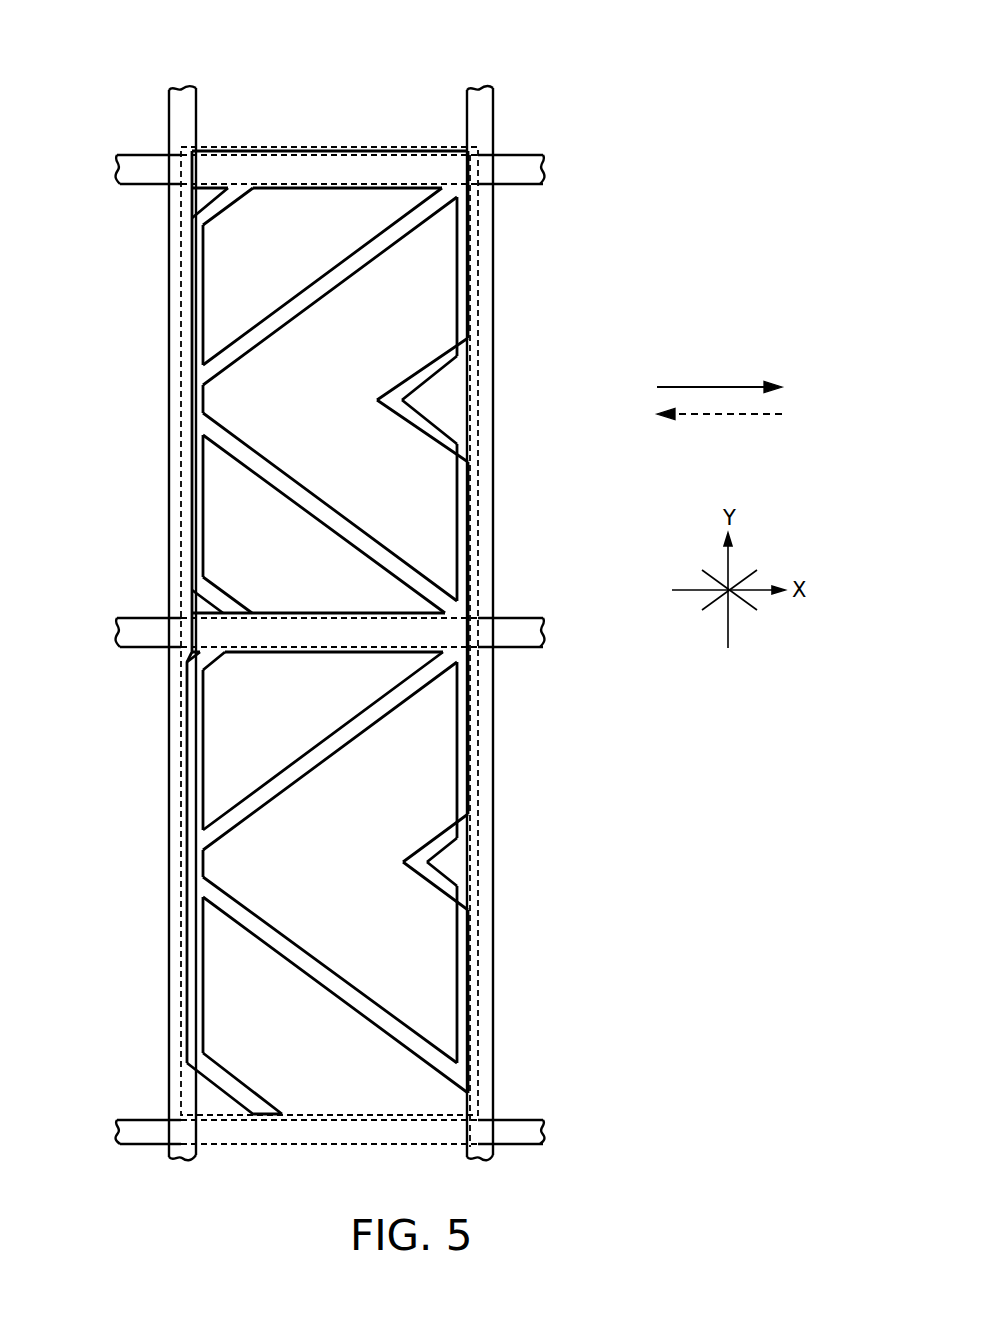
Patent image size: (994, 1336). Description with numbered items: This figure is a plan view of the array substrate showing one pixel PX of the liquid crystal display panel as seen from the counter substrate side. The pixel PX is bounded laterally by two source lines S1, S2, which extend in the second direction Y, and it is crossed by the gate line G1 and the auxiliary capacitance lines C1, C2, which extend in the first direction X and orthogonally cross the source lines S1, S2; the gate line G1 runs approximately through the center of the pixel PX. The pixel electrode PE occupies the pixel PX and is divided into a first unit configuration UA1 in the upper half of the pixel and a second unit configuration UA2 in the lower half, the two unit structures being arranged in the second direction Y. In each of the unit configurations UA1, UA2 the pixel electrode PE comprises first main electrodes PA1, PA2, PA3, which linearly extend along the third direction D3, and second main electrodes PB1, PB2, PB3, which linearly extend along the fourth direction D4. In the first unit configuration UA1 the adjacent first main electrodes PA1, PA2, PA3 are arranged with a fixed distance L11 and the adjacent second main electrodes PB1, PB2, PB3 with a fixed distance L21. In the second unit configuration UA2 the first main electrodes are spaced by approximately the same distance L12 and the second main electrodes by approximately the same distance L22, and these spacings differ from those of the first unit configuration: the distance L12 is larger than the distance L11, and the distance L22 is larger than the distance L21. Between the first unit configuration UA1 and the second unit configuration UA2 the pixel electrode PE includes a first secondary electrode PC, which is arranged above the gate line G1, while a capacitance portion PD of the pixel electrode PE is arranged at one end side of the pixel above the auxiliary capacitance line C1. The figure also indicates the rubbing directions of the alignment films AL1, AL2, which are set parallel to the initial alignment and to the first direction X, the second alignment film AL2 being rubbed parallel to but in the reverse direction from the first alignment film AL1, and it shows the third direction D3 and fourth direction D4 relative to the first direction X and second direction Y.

The source line S1 is at (181, 88).
The source line S2 is at (477, 88).
The auxiliary capacitance line C1 is at (124, 172).
The auxiliary capacitance line C2 is at (124, 1134).
The gate line G1 is at (124, 636).
The pixel PX is at (351, 146).
The pixel electrode PE is at (186, 313).
The capacitance portion PD is at (330, 190).
The first secondary electrode PC is at (325, 653).
The first main electrode PA1 is at (218, 207).
The first main electrode PA2 is at (372, 253).
The first main electrode PA3 is at (433, 362).
The second main electrode PB1 is at (222, 597).
The second main electrode PB2 is at (362, 537).
The second main electrode PB3 is at (430, 433).
The distance between adjacent first main electrodes in the first unit configuration L11 is at (398, 384).
The distance between adjacent second main electrodes in the first unit configuration L21 is at (398, 415).
The distance between adjacent first main electrodes in the second unit configuration L12 is at (345, 748).
The distance between adjacent second main electrodes in the second unit configuratio L22 is at (415, 884).
The first unit configuration UA1 is at (507, 405).
The second unit configuration UA2 is at (507, 860).
The alignment film AL1 is at (713, 385).
The second alignment film AL2 is at (720, 417).
The third direction D3 is at (742, 578).
The fourth direction D4 is at (747, 607).